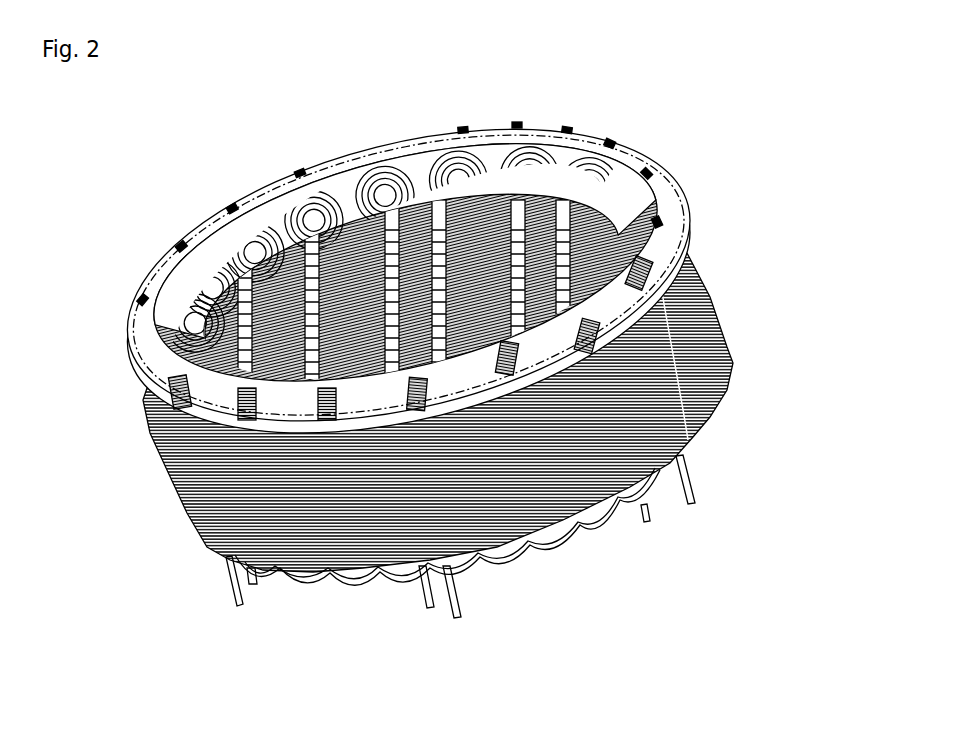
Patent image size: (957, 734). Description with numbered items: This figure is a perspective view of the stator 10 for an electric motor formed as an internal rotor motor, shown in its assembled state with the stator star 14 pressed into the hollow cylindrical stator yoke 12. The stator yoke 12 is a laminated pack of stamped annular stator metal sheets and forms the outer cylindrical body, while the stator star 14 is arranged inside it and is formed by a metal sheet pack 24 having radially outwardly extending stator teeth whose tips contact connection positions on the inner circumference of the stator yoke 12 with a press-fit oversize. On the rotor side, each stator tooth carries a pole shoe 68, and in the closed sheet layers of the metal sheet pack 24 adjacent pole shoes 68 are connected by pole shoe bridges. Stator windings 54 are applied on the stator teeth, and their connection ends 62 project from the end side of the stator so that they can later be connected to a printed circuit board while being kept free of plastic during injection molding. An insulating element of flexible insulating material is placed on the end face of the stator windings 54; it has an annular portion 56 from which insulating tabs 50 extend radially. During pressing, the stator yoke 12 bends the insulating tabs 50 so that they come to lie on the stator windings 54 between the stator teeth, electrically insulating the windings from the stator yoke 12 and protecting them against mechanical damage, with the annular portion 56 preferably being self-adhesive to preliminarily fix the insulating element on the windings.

The stator 10 is at (813, 205).
The stator yoke 12 is at (707, 240).
The stator star 14 is at (200, 260).
The metal sheet pack 24 is at (320, 187).
The insulating tabs 50 is at (167, 388).
The stator windings 54 is at (387, 590).
The annular portion 56 is at (150, 447).
The connection ends 62 is at (463, 614).
The pole shoe 68 is at (530, 137).